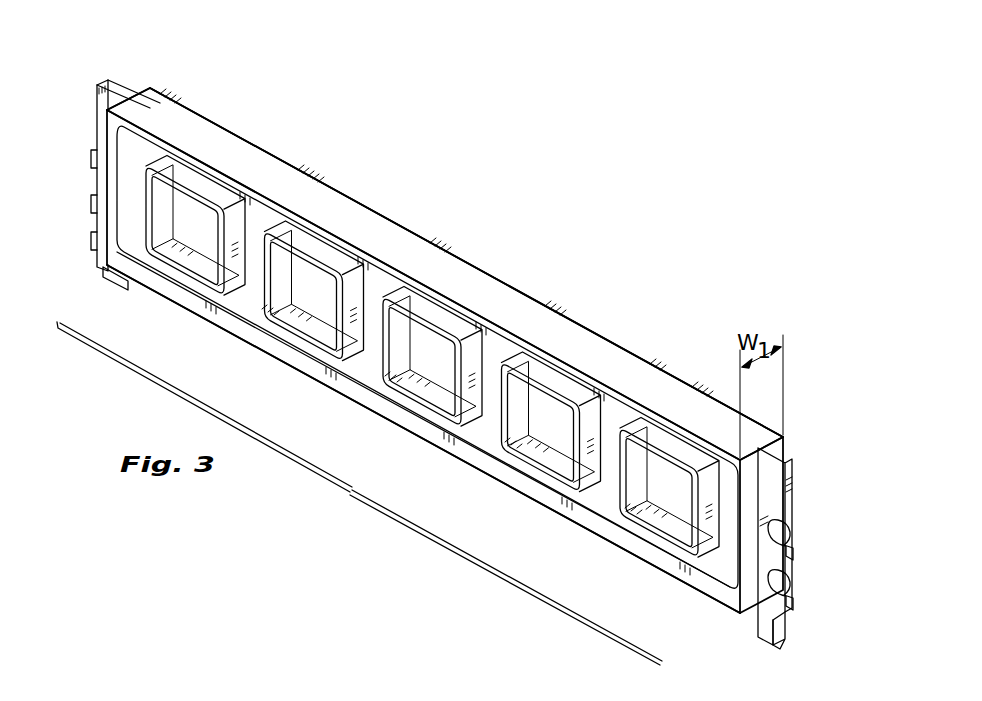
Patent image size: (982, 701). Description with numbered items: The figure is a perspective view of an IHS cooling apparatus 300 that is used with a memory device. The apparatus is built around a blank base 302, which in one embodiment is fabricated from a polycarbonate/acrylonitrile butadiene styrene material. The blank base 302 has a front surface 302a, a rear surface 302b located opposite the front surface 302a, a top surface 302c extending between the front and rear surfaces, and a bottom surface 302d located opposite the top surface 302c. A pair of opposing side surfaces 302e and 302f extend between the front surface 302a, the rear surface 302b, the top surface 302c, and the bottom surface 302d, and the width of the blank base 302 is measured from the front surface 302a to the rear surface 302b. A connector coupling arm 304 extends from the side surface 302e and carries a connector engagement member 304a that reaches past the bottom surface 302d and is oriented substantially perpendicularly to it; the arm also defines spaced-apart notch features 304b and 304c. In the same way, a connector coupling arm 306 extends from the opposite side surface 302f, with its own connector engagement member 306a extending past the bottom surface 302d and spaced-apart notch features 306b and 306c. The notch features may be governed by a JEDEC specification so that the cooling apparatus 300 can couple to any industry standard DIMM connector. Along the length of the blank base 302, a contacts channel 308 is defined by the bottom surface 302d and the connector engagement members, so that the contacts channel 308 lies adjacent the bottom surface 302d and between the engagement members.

The IHS cooling apparatus 300 is at (438, 184).
The blank base 302 is at (480, 262).
The front surface 302a is at (248, 337).
The rear surface 302b is at (297, 169).
The top surface 302c is at (194, 112).
The bottom surface 302d is at (480, 468).
The side surface 302e is at (134, 88).
The side surface 302f is at (790, 446).
The connector coupling arm 304 is at (97, 108).
The connector engagement member 304a is at (110, 278).
The notch feature 304b is at (91, 157).
The notch feature 304c is at (91, 202).
The connector coupling arm 306 is at (796, 503).
The connector engagement member 306a is at (762, 638).
The notch feature 306b is at (798, 545).
The notch feature 306c is at (798, 593).
The contacts channel 308 is at (352, 494).